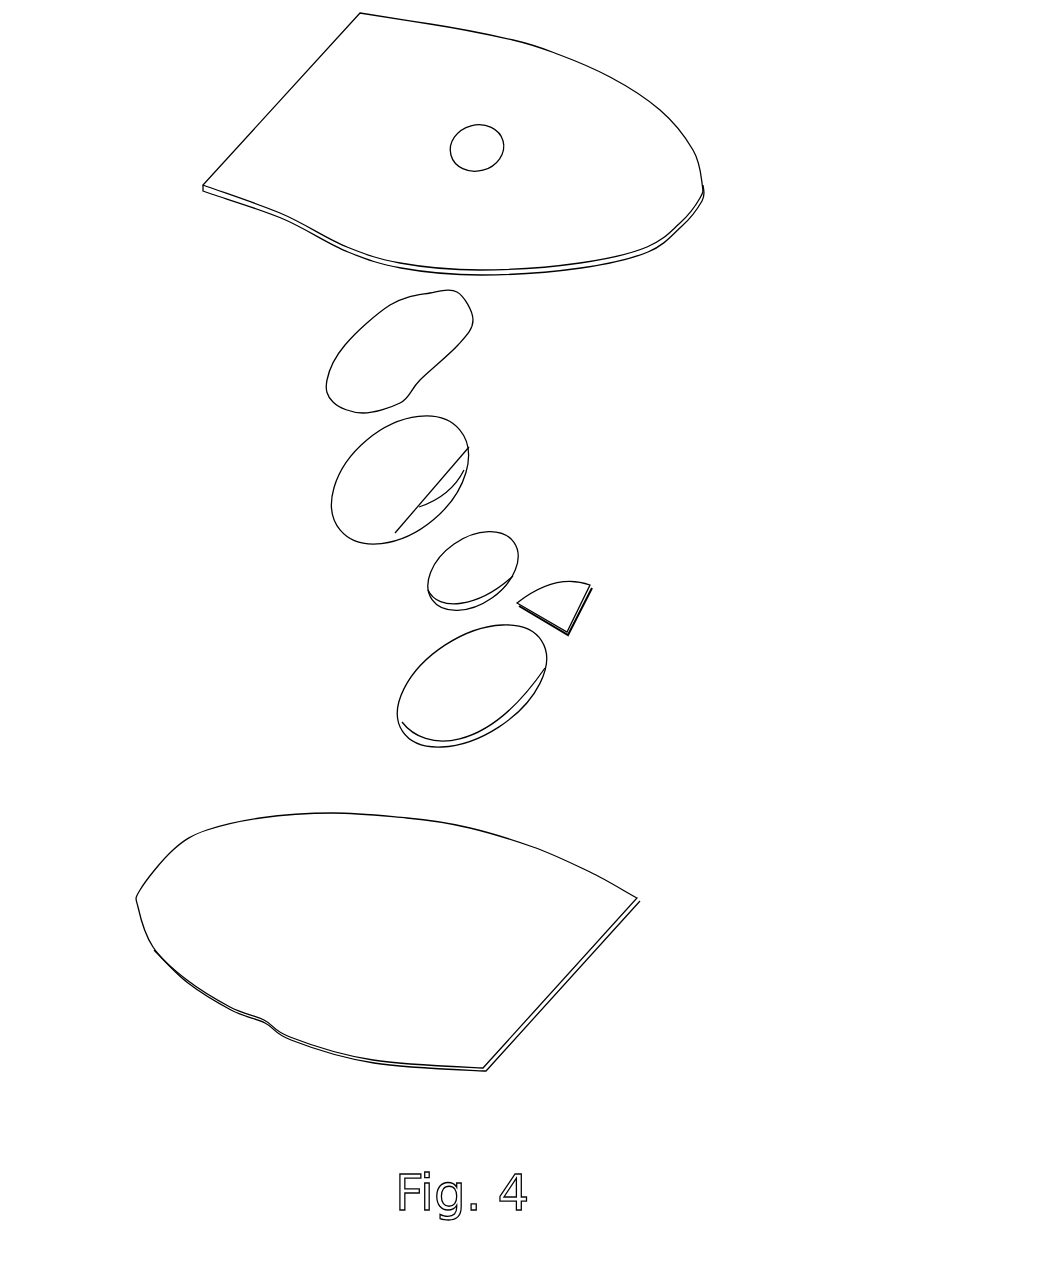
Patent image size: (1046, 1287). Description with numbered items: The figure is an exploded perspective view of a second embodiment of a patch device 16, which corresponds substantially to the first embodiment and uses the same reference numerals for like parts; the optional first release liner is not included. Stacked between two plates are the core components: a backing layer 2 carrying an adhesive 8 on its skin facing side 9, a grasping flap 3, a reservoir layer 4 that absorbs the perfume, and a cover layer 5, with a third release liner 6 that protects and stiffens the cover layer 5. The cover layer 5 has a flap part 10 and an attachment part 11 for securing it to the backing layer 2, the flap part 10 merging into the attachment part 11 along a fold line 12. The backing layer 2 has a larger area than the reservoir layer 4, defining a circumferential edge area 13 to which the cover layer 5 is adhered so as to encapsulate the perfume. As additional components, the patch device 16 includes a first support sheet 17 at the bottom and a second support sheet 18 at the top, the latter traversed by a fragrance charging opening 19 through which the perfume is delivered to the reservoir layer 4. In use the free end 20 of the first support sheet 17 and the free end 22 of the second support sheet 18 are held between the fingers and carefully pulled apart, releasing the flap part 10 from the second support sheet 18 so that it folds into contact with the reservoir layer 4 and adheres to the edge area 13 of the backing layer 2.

The backing layer 2 is at (503, 690).
The grasping flap 3 is at (565, 613).
The reservoir layer 4 is at (498, 547).
The cover layer 5 is at (453, 435).
The third release liner 6 is at (352, 360).
The adhesive 8 is at (502, 722).
The skin facing side 9 is at (423, 735).
The flap part 10 is at (353, 483).
The attachment part 11 is at (462, 477).
The fold line 12 is at (422, 502).
The circumferential edge area 13 is at (412, 700).
The patch device 16 is at (692, 404).
The first support sheet 17 is at (332, 1020).
The second support sheet 18 is at (331, 68).
The fragrance charging opening 19 is at (483, 145).
The free end 20 is at (203, 870).
The free end 22 is at (663, 168).